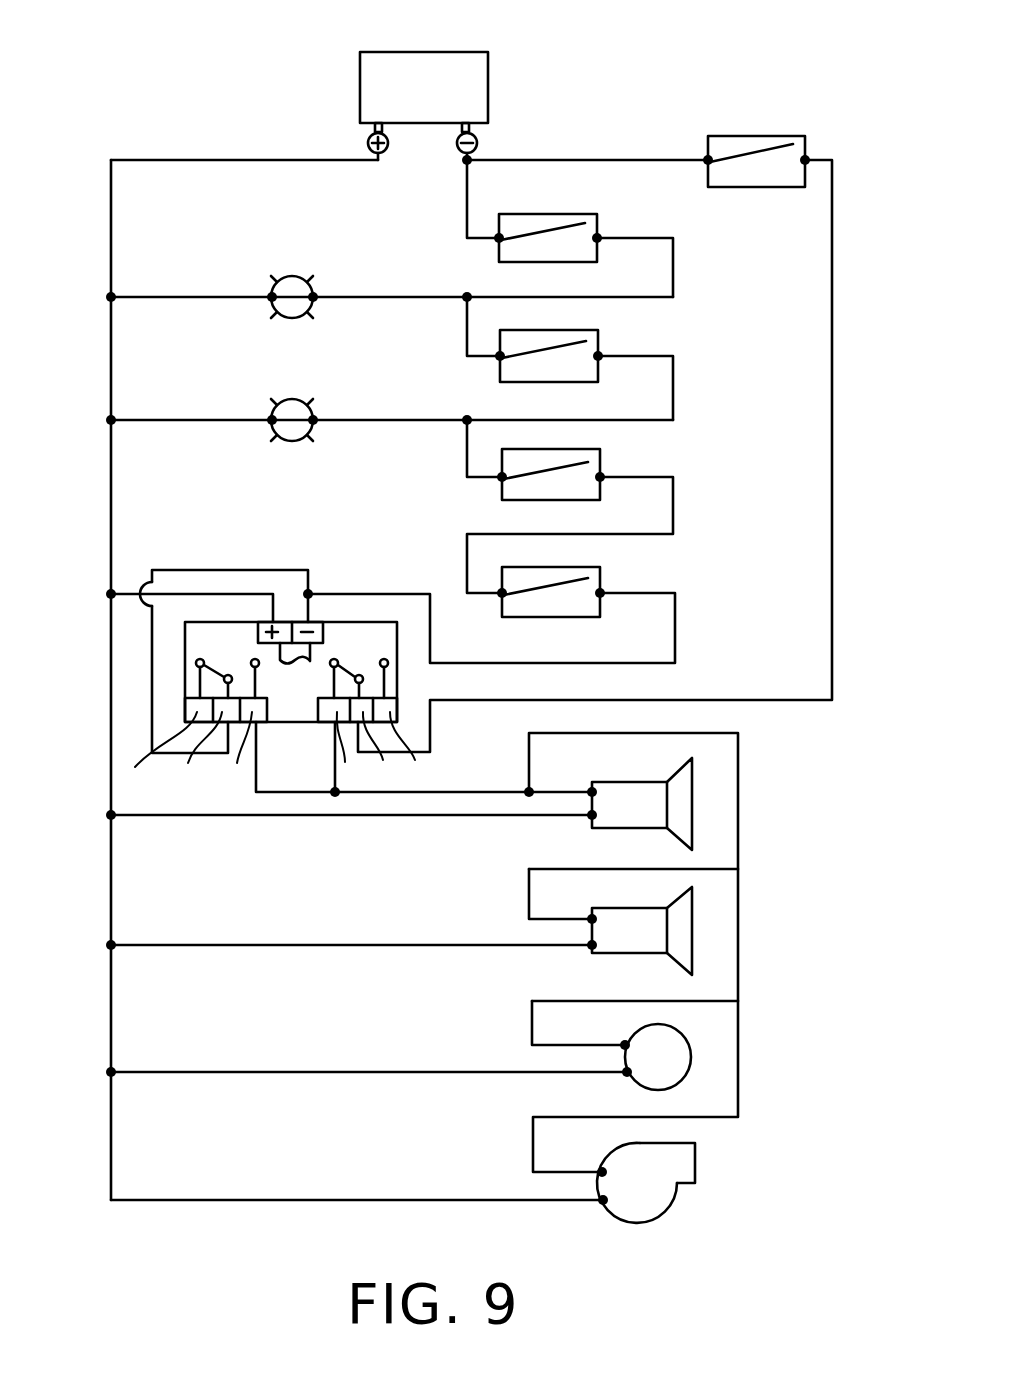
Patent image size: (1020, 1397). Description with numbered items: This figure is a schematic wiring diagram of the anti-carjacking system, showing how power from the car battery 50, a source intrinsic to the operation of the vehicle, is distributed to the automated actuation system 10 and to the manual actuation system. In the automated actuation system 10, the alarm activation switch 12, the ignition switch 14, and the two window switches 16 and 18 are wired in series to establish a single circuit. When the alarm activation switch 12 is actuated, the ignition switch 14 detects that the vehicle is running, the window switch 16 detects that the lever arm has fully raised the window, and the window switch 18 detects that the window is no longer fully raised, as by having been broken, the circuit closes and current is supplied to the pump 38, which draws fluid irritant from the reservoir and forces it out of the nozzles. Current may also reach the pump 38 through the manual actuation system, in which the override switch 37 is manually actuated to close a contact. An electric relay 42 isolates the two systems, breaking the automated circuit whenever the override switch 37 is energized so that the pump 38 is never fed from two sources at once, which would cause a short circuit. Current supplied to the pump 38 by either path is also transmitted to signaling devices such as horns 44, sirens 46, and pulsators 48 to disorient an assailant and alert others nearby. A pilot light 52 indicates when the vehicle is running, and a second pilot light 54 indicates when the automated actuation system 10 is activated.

The automated actuation system 10 is at (113, 108).
The car battery 50 is at (468, 52).
The override switch 37 is at (785, 136).
The ignition switch 14 is at (598, 220).
The alarm activation switch 12 is at (599, 340).
The window switch 16 is at (601, 458).
The window switch 18 is at (601, 572).
The pilot light 52 is at (272, 285).
The second pilot light 54 is at (272, 408).
The electric relay 42 is at (397, 674).
The horns 44 is at (644, 782).
The sirens 46 is at (646, 908).
The pulsators 48 is at (644, 1029).
The pump 38 is at (680, 1195).